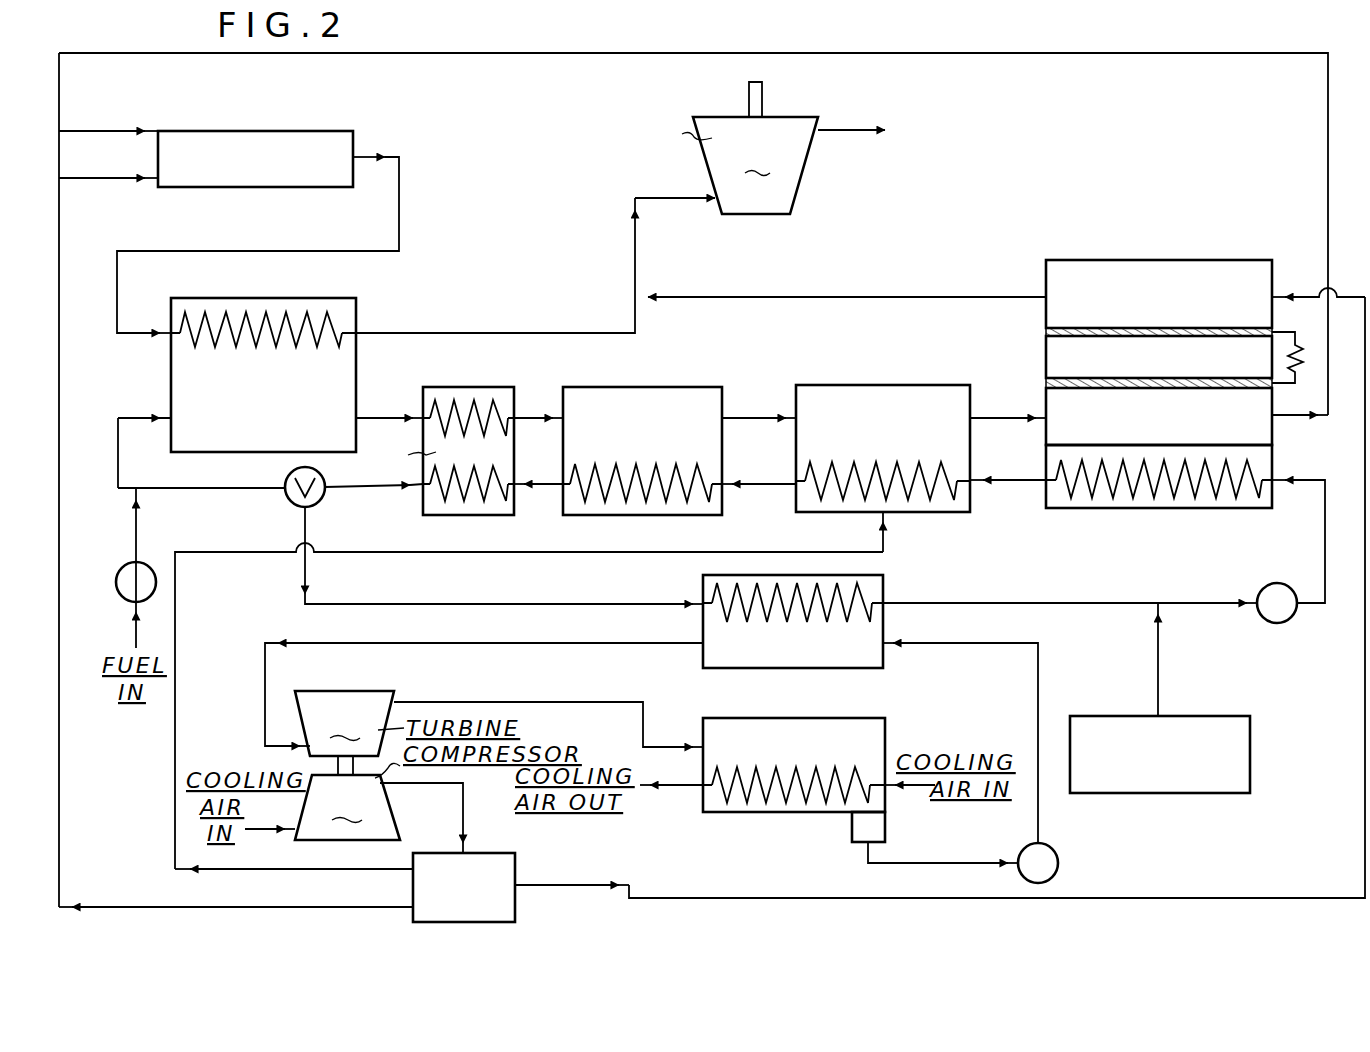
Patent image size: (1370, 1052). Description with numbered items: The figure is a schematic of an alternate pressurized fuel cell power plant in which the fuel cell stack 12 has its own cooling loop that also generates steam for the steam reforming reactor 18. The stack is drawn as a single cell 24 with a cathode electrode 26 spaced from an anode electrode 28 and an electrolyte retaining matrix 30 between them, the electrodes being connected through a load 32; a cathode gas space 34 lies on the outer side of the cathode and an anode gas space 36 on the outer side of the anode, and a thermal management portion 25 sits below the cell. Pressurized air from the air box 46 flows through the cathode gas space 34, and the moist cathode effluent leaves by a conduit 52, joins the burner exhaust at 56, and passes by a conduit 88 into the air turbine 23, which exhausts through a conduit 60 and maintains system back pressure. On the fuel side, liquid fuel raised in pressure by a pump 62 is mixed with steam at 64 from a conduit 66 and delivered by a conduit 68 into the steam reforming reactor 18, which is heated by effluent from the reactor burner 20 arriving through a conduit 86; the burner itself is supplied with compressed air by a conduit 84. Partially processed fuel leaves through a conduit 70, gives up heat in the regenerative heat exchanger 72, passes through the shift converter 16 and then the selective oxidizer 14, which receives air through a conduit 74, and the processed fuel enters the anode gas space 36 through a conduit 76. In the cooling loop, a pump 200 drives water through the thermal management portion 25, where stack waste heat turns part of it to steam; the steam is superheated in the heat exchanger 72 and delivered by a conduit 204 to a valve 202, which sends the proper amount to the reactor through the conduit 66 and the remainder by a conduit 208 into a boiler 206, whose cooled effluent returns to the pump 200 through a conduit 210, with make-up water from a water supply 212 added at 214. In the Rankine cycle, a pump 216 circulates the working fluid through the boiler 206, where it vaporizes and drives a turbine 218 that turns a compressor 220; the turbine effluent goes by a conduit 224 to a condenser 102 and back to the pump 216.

The fuel cell stack 12 is at (1160, 245).
The selective oxidizer 14 is at (874, 358).
The shift converter 16 is at (672, 362).
The steam reforming reactor 18 is at (335, 299).
The reactor burner 20 is at (235, 133).
The air turbine 23 is at (656, 148).
The fuel cell 24 is at (1046, 364).
The thermal management portion 25 is at (1157, 498).
The cathode electrode 26 is at (1266, 332).
The anode electrode 28 is at (1272, 388).
The electrolyte retaining matrix 30 is at (1046, 345).
The load 32 is at (1305, 350).
The cathode gas space 34 is at (1242, 270).
The anode gas space 36 is at (1272, 428).
The air box 46 is at (508, 868).
The conduit 52 is at (818, 272).
The junction 56 is at (634, 298).
The conduit 60 is at (848, 128).
The pump 62 is at (124, 568).
The mixing point 64 is at (136, 488).
The conduit 66 is at (182, 490).
The conduit 68 is at (118, 435).
The conduit 70 is at (374, 418).
The regenerative heat exchanger 72 is at (462, 395).
The conduit 74 is at (856, 552).
The conduit 76 is at (985, 419).
The conduit 84 is at (68, 179).
The conduit 86 is at (402, 192).
The conduit 88 is at (672, 172).
The condenser 102 is at (828, 692).
The pump 200 is at (1277, 583).
The valve 202 is at (294, 500).
The conduit 204 is at (333, 492).
The boiler 206 is at (878, 580).
The conduit 208 is at (342, 604).
The conduit 210 is at (960, 598).
The water supply 212 is at (1226, 722).
The make-up point 214 is at (1158, 602).
The pump 216 is at (1055, 856).
The turbine 218 is at (344, 733).
The compressor 220 is at (347, 807).
The conduit 224 is at (420, 700).